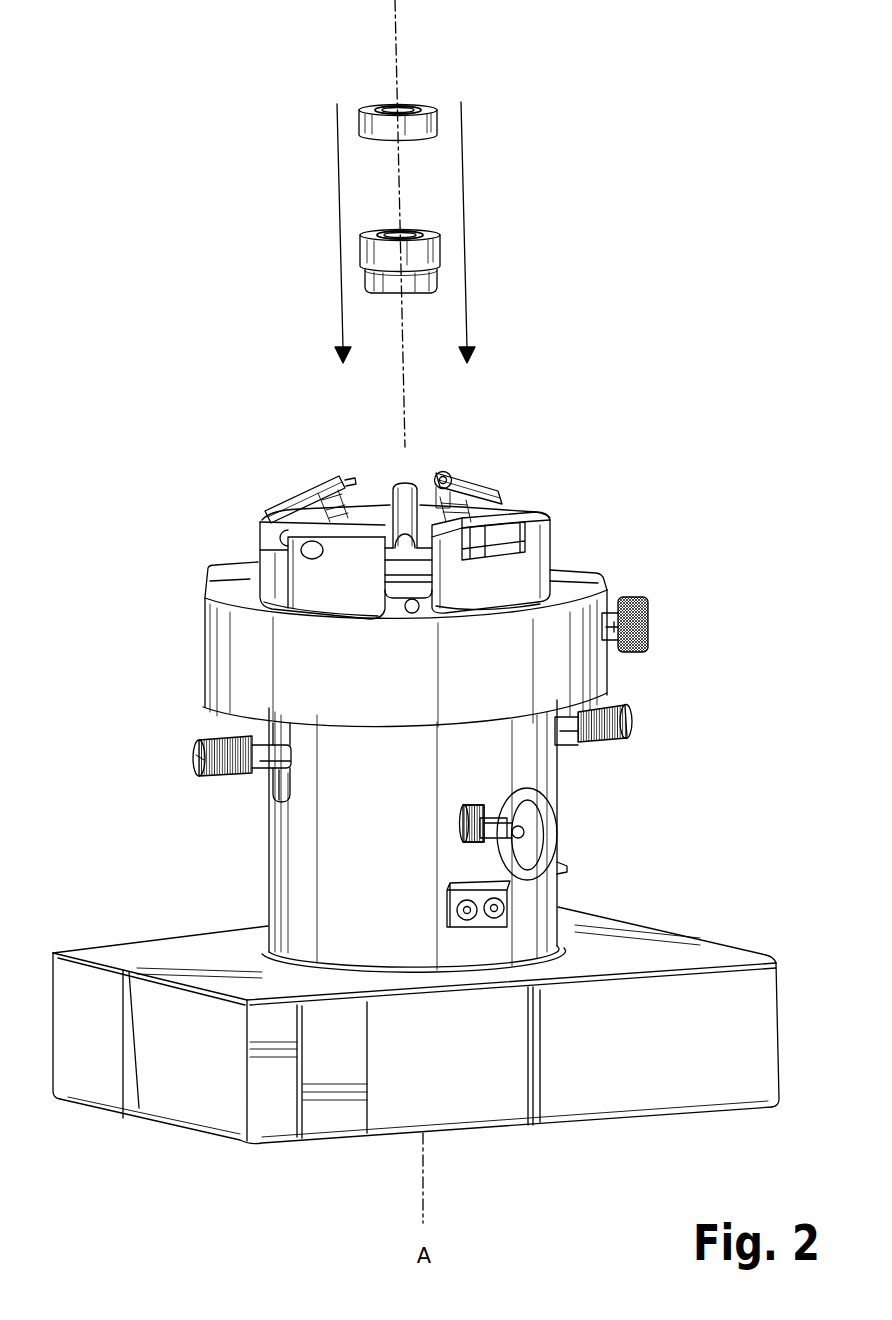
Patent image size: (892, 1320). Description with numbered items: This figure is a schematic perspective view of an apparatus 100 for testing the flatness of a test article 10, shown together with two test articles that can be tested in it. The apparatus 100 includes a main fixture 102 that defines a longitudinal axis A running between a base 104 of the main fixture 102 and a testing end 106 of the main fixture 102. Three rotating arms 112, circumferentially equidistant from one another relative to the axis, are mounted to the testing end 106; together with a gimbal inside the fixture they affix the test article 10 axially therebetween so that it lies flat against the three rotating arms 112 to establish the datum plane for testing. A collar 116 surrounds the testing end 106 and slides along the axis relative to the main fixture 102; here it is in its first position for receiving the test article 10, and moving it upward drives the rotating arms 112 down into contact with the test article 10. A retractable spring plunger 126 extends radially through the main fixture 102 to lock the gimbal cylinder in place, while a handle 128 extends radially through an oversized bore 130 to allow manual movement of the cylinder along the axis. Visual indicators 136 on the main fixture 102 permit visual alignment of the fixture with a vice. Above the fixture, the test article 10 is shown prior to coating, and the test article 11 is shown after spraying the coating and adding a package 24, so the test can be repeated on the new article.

The test article 10 is at (422, 197).
The test article 11 is at (467, 250).
The package 24 is at (370, 281).
The apparatus 100 is at (685, 438).
The main fixture 102 is at (275, 838).
The base 104 is at (680, 1085).
The testing end 106 is at (615, 547).
The rotating arms 112 is at (272, 477).
The collar 116 is at (242, 657).
The retractable spring plunger 126 is at (497, 812).
The handle 128 is at (192, 750).
The oversized bore 130 is at (298, 788).
The visual indicators 136 is at (503, 905).